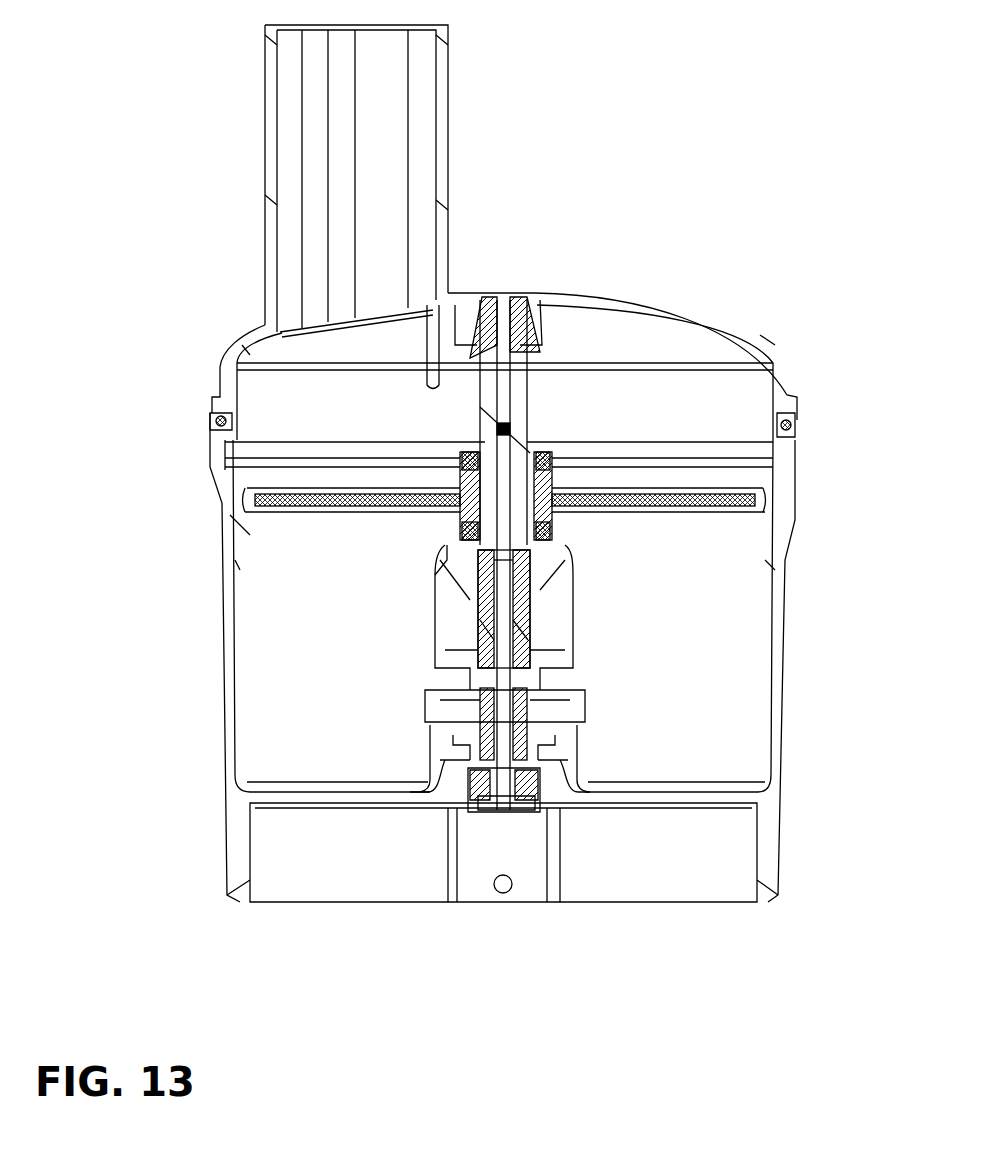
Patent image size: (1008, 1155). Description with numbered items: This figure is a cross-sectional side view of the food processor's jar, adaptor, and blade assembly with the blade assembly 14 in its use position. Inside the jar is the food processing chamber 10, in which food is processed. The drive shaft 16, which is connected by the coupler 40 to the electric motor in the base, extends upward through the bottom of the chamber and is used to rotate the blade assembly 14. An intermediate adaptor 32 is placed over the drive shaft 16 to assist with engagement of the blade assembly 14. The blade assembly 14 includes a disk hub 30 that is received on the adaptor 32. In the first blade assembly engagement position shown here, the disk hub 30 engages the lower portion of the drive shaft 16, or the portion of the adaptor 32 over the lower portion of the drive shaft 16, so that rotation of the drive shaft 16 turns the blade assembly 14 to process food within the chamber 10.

The food processing chamber 10 is at (710, 558).
The blade assembly 14 is at (716, 493).
The drive shaft 16 is at (502, 612).
The disk hub 30 is at (552, 482).
The adaptor 32 is at (553, 632).
The coupler 40 is at (537, 787).